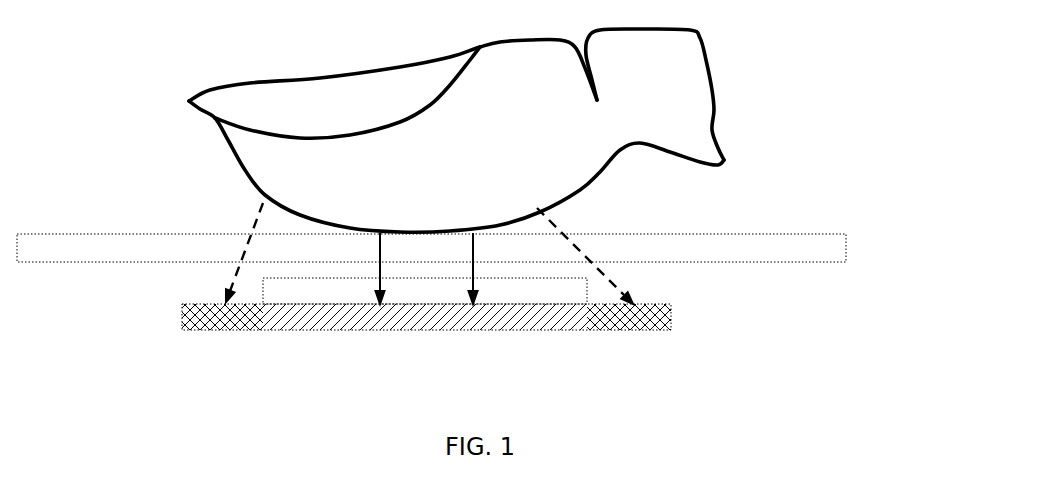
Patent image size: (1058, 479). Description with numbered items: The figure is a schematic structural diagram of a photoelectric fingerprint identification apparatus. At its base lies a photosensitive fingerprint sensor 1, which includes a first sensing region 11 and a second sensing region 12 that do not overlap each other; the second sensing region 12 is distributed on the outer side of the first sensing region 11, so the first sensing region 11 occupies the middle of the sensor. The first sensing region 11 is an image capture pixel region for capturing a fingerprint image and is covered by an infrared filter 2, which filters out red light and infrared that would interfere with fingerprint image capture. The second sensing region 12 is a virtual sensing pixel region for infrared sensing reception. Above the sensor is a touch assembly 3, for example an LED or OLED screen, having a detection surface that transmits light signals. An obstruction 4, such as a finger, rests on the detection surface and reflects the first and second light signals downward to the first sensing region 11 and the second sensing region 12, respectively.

The photosensitive fingerprint sensor 1 is at (684, 318).
The first sensing region 11 is at (425, 330).
The second sensing region 12 is at (222, 330).
The infrared filter 2 is at (557, 288).
The touch assembly 3 is at (858, 248).
The obstruction 4 is at (729, 124).